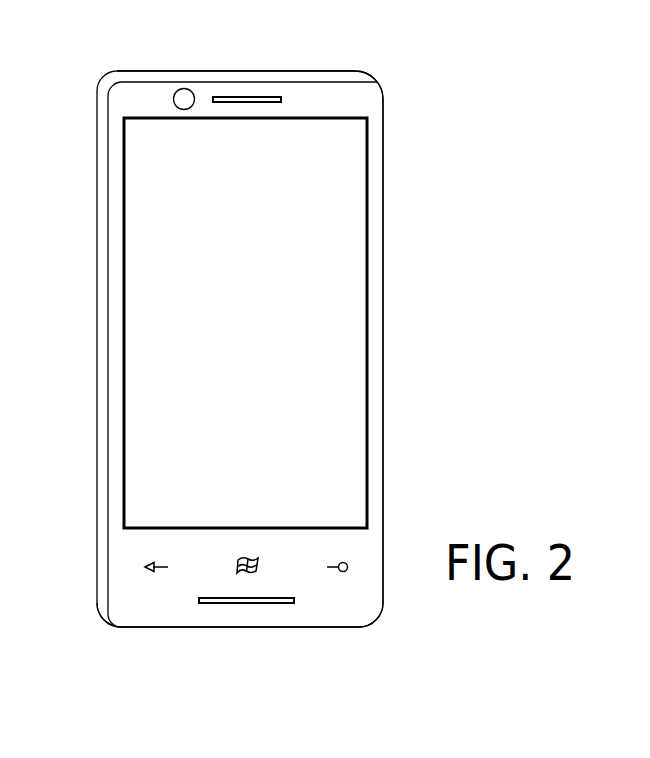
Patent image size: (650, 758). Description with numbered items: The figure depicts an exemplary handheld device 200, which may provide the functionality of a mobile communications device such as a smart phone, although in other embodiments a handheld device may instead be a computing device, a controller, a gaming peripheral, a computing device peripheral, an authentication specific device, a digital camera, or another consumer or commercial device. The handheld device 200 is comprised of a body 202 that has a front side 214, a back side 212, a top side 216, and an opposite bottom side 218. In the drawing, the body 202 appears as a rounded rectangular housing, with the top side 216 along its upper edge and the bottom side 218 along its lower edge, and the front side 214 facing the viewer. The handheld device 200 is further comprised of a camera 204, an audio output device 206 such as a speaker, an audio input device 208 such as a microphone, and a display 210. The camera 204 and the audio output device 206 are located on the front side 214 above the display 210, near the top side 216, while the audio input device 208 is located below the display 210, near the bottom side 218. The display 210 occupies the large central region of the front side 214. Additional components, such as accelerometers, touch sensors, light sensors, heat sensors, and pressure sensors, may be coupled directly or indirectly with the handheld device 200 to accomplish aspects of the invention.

The handheld device 200 is at (522, 98).
The body 202 is at (119, 103).
The camera 204 is at (181, 97).
The audio output device 206 is at (235, 93).
The audio input device 208 is at (224, 609).
The display 210 is at (153, 298).
The back side 212 is at (289, 64).
The front side 214 is at (369, 103).
The top side 216 is at (344, 66).
The bottom side 218 is at (342, 632).